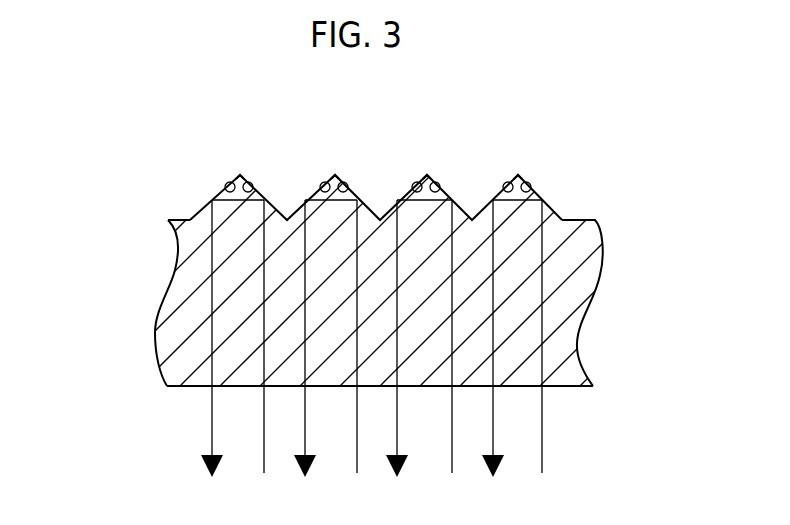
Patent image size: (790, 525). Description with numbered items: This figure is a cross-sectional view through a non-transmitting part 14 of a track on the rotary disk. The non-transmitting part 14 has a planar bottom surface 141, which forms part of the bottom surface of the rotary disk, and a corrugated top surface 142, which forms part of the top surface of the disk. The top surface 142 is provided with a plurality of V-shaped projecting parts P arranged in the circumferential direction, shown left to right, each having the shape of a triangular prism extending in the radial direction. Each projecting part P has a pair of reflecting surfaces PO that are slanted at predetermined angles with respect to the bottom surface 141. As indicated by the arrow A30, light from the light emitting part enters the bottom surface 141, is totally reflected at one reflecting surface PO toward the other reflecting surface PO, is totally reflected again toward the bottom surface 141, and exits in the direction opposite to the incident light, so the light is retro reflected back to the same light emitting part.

The non-transmitting part 14 is at (125, 88).
The bottom surface 141 is at (370, 387).
The top surface 142 is at (375, 210).
The projecting part P is at (243, 166).
The reflecting surface PO is at (225, 187).
The arrow indicating light route A30 is at (345, 305).